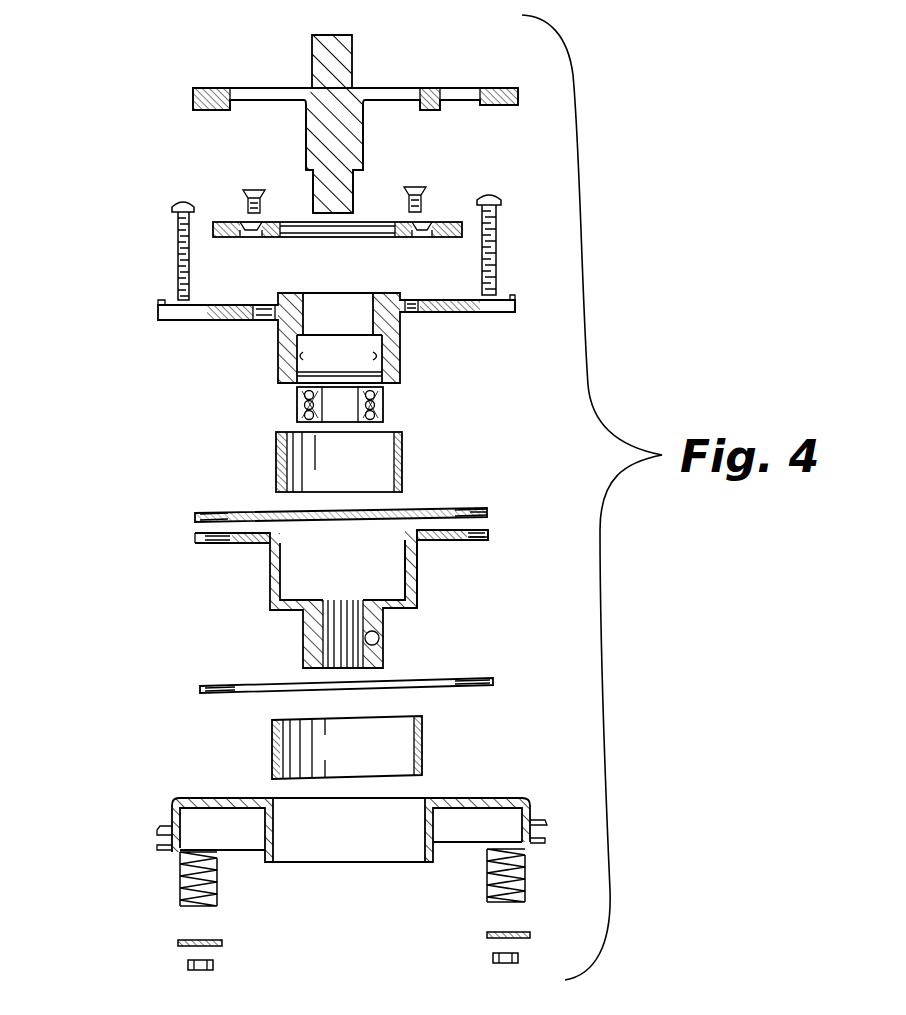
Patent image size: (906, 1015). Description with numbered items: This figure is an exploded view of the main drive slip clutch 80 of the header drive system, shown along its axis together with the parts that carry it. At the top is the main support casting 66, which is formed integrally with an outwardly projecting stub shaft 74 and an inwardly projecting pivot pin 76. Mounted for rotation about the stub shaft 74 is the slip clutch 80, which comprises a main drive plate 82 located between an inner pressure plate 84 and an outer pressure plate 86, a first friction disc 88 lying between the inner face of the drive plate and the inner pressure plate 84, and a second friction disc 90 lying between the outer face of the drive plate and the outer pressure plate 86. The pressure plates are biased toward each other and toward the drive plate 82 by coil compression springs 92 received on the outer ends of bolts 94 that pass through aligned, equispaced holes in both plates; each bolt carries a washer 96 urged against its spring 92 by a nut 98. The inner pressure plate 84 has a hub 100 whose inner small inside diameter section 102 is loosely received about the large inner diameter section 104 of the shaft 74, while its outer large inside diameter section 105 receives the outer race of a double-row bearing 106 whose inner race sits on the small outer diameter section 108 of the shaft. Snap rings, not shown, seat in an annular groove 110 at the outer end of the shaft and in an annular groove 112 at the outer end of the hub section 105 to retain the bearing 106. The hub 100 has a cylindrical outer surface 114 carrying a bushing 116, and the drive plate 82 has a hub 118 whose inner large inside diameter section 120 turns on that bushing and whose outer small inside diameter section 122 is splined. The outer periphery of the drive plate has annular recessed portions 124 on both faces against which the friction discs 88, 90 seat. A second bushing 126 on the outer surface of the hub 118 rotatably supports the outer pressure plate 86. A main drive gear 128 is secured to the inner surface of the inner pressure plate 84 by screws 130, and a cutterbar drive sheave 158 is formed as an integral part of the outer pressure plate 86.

The main support casting 66 is at (268, 112).
The stub shaft 74 is at (367, 128).
The pivot pin 76 is at (352, 48).
The main drive slip clutch 80 is at (122, 312).
The main drive plate 82 is at (250, 545).
The inner pressure plate 84 is at (465, 312).
The outer pressure plate 86 is at (250, 798).
The first friction disc 88 is at (468, 508).
The second friction disc 90 is at (488, 678).
The coil compression springs 92 is at (180, 885).
The bolts 94 is at (172, 237).
The washer 96 is at (222, 943).
The nut 98 is at (213, 965).
The hub 100 is at (276, 338).
The inner small inside diameter section 102 is at (305, 300).
The large inner diameter section 104 is at (306, 143).
The outer large inside diameter section 105 is at (397, 358).
The double-row bearing 106 is at (384, 395).
The small outer diameter section 108 is at (355, 190).
The annular groove 110 is at (372, 237).
The annular groove 112 is at (281, 375).
The cylindrical outer surface 114 is at (282, 355).
The bushing 116 is at (403, 445).
The hub 118 is at (403, 611).
The inner large inside diameter section 120 is at (410, 576).
The outer small inside diameter section 122 is at (330, 670).
The annular recessed portions 124 is at (522, 528).
The second bushing 126 is at (425, 728).
The main drive gear 128 is at (242, 238).
The screws 130 is at (241, 204).
The cutterbar drive sheave 158 is at (157, 845).